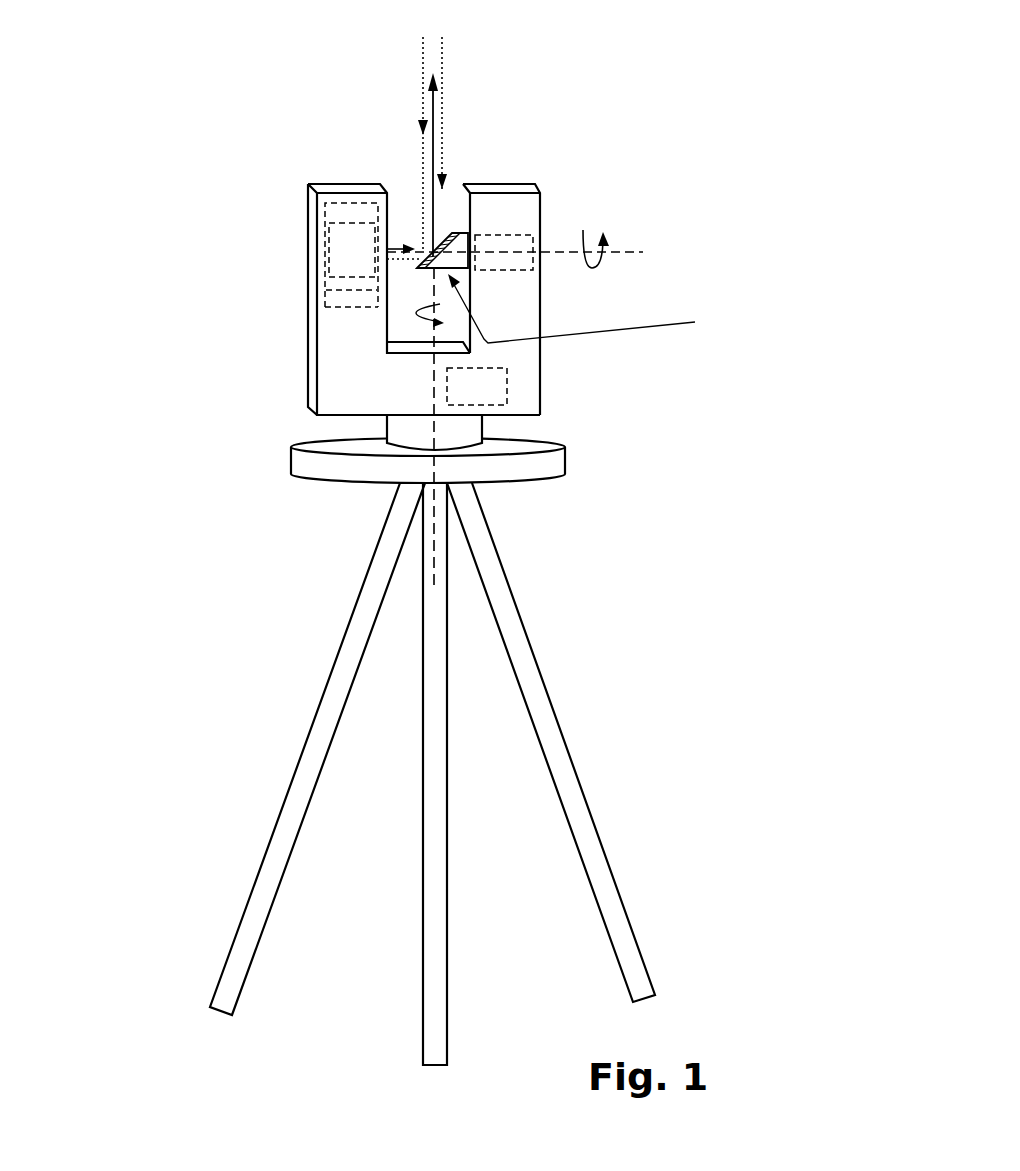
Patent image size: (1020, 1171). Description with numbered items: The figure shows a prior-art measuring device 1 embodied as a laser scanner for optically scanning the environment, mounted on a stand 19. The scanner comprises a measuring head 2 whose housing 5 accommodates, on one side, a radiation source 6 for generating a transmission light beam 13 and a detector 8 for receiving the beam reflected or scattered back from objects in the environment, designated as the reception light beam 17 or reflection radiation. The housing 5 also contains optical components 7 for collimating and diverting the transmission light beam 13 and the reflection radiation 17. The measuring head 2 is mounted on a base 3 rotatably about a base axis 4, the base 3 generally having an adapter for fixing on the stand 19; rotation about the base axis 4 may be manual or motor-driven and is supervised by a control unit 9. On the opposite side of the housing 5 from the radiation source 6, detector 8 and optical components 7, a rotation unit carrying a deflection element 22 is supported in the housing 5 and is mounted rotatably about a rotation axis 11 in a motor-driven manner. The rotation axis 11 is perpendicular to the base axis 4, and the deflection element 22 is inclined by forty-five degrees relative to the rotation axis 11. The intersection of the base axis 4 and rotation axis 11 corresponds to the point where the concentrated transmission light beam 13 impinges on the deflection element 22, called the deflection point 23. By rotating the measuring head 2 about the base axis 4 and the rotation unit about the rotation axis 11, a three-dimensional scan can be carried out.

The surveying device 1 is at (296, 169).
The measuring head 2 is at (288, 391).
The base 3 is at (452, 437).
The base axis 4 is at (433, 375).
The housing 5 is at (510, 307).
The radiation source 6 is at (328, 205).
The optical components 7 is at (345, 243).
The detector 8 is at (345, 297).
The control unit 9 is at (493, 388).
The rotation axis 11 is at (628, 248).
The transmission light beam 13 is at (438, 105).
The reception light beam 17 is at (422, 67).
The stand 19 is at (532, 683).
The deflection element 22 is at (448, 233).
The deflection point 23 is at (432, 245).